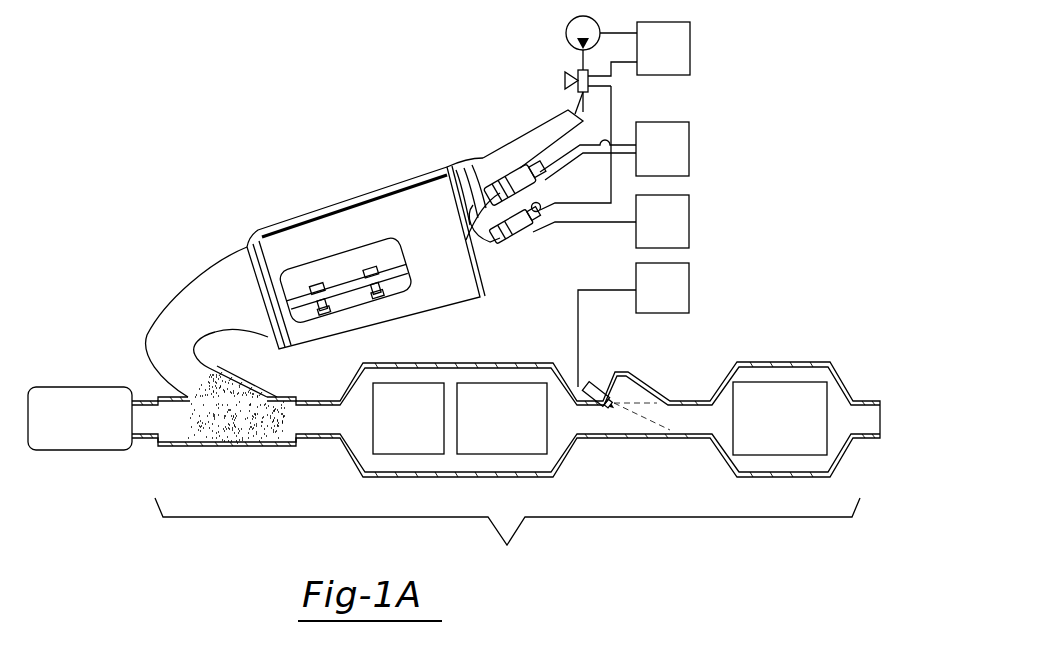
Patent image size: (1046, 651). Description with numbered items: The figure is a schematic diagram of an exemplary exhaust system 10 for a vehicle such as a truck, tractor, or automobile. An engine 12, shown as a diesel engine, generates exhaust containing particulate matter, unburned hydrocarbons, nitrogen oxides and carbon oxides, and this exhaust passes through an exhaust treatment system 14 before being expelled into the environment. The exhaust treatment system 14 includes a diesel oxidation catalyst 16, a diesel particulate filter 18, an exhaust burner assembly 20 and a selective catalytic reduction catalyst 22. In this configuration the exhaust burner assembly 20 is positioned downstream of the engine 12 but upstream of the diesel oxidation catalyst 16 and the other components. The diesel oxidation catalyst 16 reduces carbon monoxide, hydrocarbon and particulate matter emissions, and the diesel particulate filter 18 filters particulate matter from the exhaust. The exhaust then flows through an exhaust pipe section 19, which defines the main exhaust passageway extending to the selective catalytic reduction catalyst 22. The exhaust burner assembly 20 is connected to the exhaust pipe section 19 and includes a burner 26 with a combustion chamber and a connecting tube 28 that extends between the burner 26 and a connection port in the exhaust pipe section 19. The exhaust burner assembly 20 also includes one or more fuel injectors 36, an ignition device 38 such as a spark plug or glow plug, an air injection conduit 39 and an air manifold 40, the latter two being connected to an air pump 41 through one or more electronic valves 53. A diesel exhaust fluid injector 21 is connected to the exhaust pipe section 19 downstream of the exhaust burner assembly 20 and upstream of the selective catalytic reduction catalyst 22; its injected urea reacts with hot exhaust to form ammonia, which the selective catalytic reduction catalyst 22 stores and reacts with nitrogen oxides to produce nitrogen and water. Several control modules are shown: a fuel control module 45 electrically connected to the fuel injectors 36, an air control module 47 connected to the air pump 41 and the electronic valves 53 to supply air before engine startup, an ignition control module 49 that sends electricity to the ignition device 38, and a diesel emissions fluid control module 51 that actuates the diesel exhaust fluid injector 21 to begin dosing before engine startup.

The exhaust system 10 is at (222, 116).
The engine 12 is at (65, 387).
The exhaust treatment system 14 is at (507, 538).
The diesel oxidation catalyst 16 is at (410, 385).
The diesel particulate filter 18 is at (500, 385).
The exhaust pipe section 19 is at (186, 447).
The exhaust burner assembly 20 is at (188, 240).
The diesel exhaust fluid injector 21 is at (590, 385).
The selective catalytic reduction catalyst 22 is at (742, 452).
The burner 26 is at (325, 235).
The connecting tube 28 is at (160, 318).
The fuel injectors 36 is at (515, 180).
The ignition device 38 is at (525, 240).
The air injection conduit 39 is at (541, 204).
The air manifold 40 is at (403, 188).
The air pump 41 is at (566, 33).
The fuel control module 45 is at (662, 149).
The air control module 47 is at (663, 48).
The ignition control module 49 is at (662, 221).
The diesel emissions fluid control module 51 is at (633, 325).
The electronic valves 53 is at (556, 76).